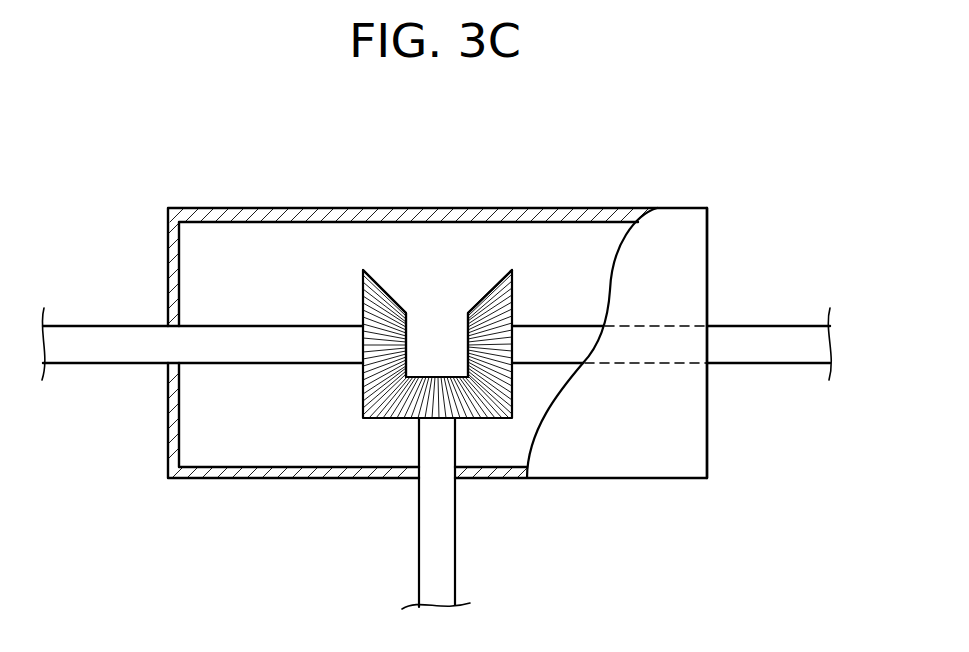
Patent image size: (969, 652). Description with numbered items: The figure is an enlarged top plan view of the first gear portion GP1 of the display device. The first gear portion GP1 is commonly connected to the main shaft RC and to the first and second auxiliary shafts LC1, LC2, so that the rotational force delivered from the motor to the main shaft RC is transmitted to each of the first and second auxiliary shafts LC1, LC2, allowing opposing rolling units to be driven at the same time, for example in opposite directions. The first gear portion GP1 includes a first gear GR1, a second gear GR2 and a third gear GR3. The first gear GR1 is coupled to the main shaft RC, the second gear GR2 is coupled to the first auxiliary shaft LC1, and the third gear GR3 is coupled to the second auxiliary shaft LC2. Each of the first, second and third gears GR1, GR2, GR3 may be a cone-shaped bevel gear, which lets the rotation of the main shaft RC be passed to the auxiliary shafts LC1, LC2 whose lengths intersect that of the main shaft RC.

The first gear GR1 is at (393, 418).
The second gear GR2 is at (390, 294).
The third gear GR3 is at (485, 294).
The first auxiliary shaft LC1 is at (107, 345).
The second auxiliary shaft LC2 is at (771, 345).
The main shaft RC is at (440, 541).
The first gear portion GP1 is at (626, 480).